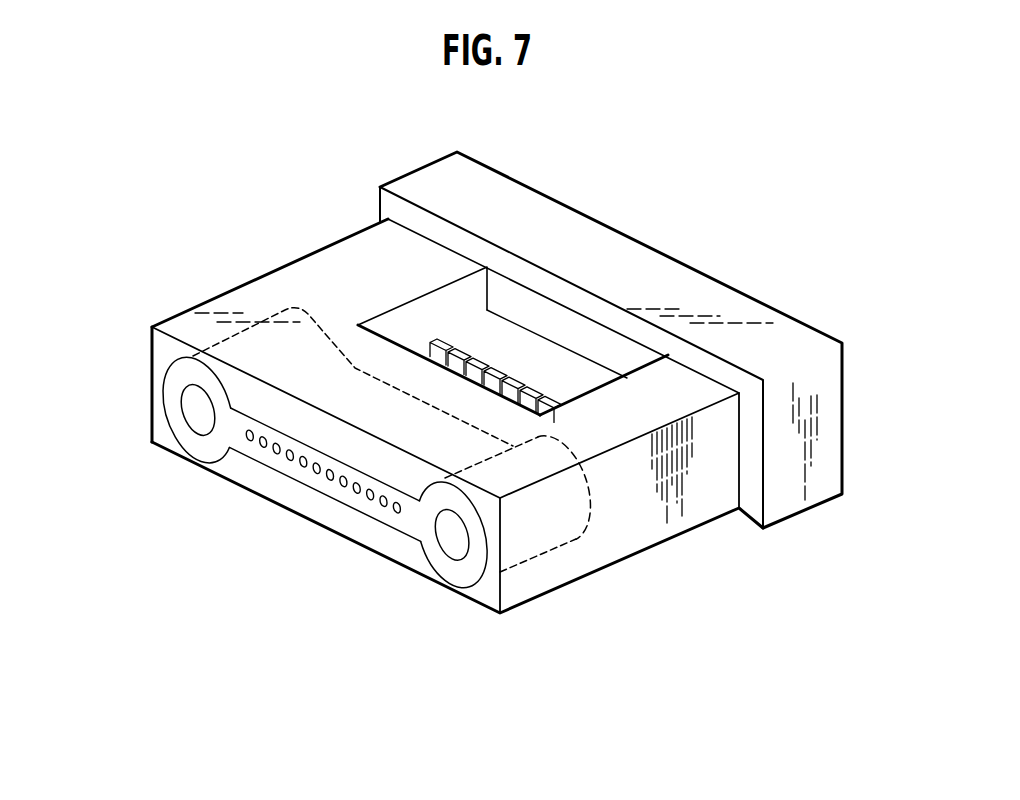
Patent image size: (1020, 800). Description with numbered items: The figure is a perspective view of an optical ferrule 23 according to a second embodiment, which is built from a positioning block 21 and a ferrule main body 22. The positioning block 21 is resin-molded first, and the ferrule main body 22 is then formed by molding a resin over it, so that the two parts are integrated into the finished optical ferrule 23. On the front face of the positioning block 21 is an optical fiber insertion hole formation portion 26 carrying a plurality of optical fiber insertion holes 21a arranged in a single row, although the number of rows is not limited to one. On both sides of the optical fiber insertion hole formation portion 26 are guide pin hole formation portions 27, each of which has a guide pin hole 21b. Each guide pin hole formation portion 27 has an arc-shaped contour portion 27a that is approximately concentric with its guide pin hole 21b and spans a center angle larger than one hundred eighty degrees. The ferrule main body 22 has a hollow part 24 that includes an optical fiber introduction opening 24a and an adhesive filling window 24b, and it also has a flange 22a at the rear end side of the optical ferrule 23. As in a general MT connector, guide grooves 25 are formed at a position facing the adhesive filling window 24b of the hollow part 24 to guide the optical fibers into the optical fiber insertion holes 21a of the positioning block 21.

The positioning block 21 is at (412, 518).
The optical fiber insertion holes 21a is at (302, 463).
The guide pin holes 21b is at (196, 407).
The ferrule main body 22 is at (543, 583).
The flange 22a is at (518, 200).
The optical ferrule 23 is at (480, 703).
The hollow part 24 is at (583, 368).
The optical fiber introduction opening 24a is at (493, 325).
The adhesive filling window 24b is at (579, 378).
The guide grooves 25 is at (530, 390).
The optical fiber insertion hole formation portion 26 is at (330, 487).
The guide pin hole formation portions 27 is at (197, 437).
The contour portion 27a is at (167, 386).